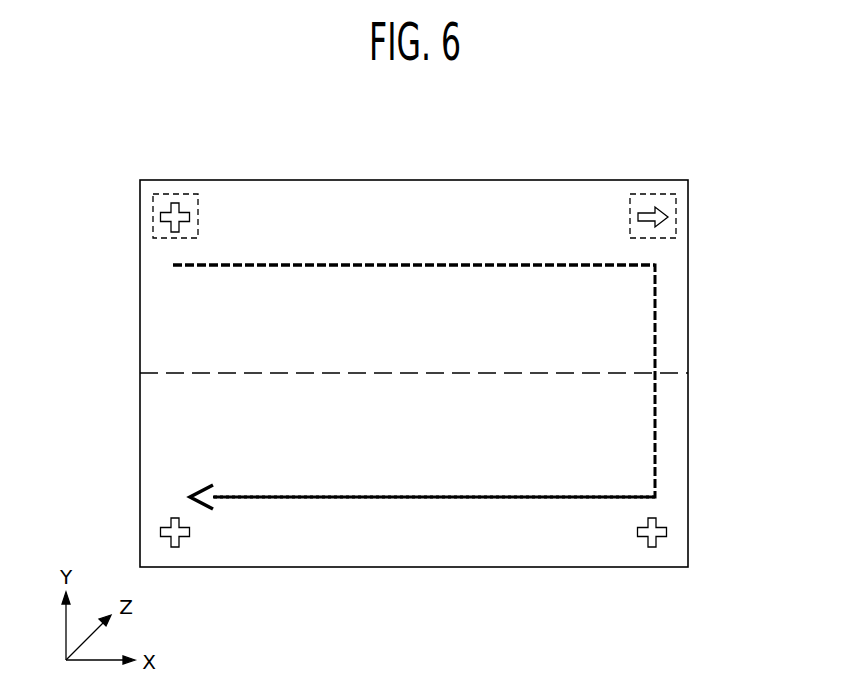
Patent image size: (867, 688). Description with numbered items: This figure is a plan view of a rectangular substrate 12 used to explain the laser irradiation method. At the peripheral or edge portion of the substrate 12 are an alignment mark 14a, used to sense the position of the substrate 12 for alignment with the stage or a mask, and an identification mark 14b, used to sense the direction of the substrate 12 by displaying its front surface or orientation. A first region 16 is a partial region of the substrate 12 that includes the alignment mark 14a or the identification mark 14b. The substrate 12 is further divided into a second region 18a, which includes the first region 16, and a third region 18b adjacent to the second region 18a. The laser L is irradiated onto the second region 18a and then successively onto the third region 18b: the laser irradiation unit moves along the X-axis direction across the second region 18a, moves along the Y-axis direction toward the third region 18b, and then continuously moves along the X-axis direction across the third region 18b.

The substrate 12 is at (690, 437).
The alignment mark 14a is at (175, 547).
The identification mark 14b is at (645, 213).
The first region 16 is at (198, 209).
The second region 18a is at (422, 241).
The third region 18b is at (424, 522).
The laser L is at (414, 373).